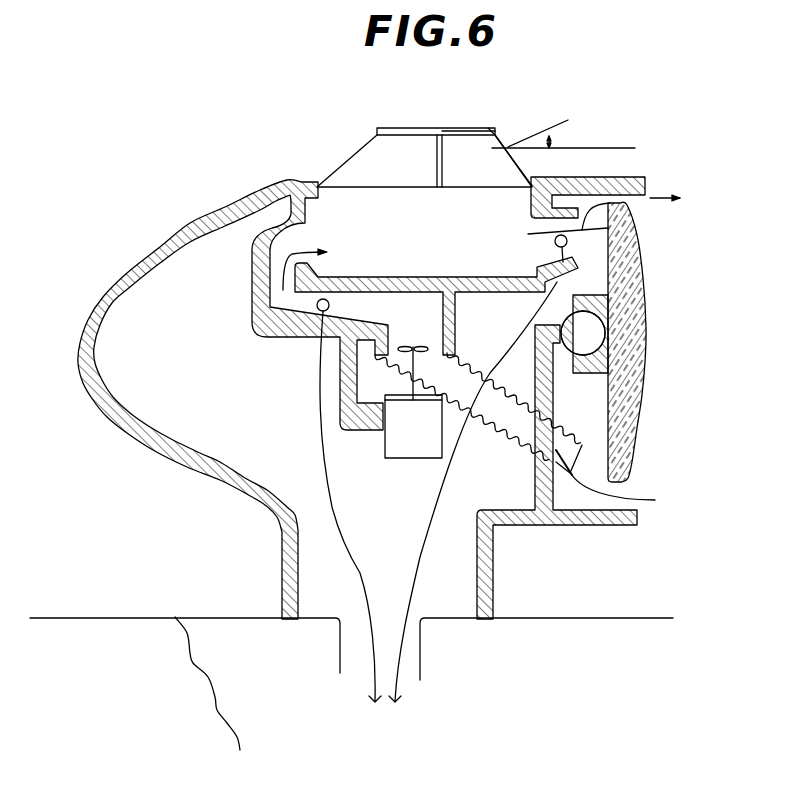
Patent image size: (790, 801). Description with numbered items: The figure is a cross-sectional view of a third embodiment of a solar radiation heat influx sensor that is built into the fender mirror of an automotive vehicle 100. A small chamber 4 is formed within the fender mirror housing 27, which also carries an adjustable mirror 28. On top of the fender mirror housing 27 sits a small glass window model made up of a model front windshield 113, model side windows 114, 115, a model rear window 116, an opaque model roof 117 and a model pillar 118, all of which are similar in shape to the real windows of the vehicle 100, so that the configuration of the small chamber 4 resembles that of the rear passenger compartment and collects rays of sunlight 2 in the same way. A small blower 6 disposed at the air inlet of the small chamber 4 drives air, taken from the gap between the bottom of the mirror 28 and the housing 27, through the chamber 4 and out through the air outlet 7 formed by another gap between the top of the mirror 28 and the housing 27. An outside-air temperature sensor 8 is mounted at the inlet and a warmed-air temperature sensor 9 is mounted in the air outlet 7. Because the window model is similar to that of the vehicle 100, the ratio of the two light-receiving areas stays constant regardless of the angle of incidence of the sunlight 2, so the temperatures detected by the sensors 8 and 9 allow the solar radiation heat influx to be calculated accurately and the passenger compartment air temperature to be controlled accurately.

The rays of sunlight 2 is at (567, 122).
The small chamber 4 is at (389, 260).
The small blower 6 is at (392, 443).
The air outlet 7 is at (568, 243).
The outside-air temperature sensor 8 is at (317, 305).
The warmed-air temperature sensor 9 is at (627, 222).
The fender mirror housing 27 is at (207, 208).
The adjustable mirror 28 is at (640, 347).
The vehicle 100 is at (597, 633).
The model front windshield 113 is at (355, 150).
The model side window 114 is at (403, 145).
The model side window 115 is at (458, 145).
The model rear window 116 is at (512, 147).
The model roof 117 is at (487, 128).
The model pillar 118 is at (435, 165).